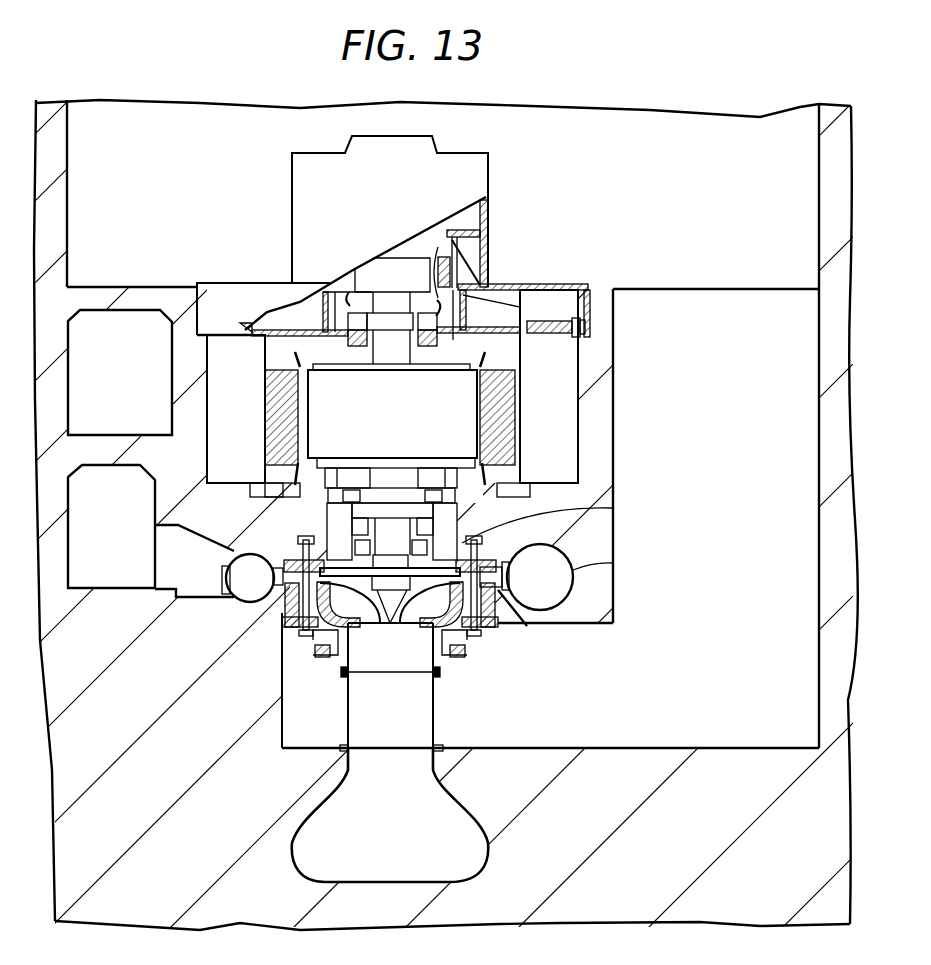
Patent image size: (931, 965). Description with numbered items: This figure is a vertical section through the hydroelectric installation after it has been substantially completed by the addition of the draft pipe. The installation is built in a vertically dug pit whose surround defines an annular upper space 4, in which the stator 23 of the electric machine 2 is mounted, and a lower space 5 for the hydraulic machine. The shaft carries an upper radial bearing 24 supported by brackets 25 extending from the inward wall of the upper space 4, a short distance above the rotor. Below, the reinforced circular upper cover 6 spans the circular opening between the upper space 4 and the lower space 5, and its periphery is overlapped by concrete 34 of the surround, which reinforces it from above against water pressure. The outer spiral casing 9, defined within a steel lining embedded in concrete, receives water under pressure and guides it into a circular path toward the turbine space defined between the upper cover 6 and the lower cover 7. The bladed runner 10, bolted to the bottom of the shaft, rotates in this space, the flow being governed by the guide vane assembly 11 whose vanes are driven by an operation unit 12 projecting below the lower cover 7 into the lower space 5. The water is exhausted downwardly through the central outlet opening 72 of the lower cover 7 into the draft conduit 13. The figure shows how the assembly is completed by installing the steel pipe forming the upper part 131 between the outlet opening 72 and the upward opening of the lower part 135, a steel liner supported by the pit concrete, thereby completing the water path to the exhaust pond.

The electric machine 2 is at (490, 185).
The annular upper space 4 is at (557, 405).
The lower space 5 is at (651, 686).
The upper cover 6 is at (295, 536).
The lower cover 7 is at (411, 622).
The spiral casing 9 is at (582, 568).
The bladed runner 10 is at (368, 607).
The guide vane assembly 11 is at (506, 603).
The operation unit 12 is at (478, 645).
The draft conduit 13 is at (406, 784).
The stator 23 is at (507, 432).
The upper radial bearing 24 is at (434, 318).
The brackets 25 is at (556, 320).
The concrete 34 is at (560, 548).
The central outlet opening 72 is at (430, 620).
The upper part of draft conduit 131 is at (435, 709).
The lower part of draft conduit 135 is at (480, 866).